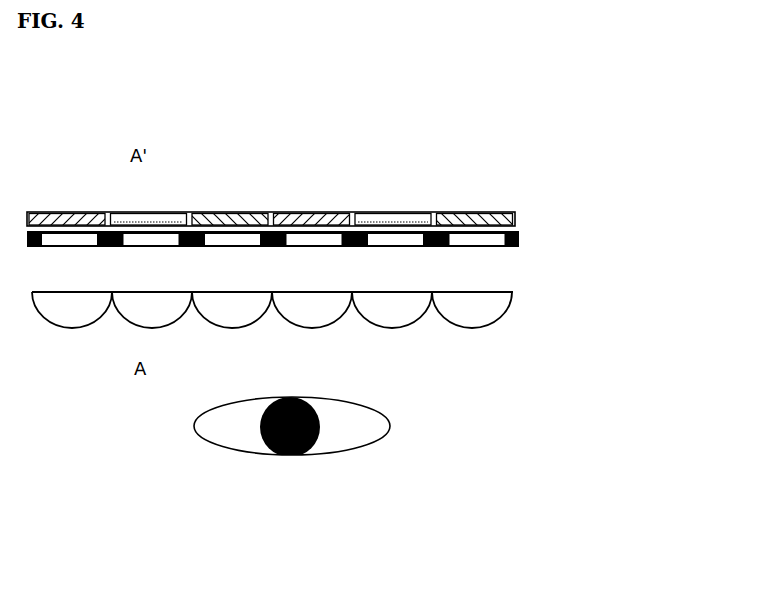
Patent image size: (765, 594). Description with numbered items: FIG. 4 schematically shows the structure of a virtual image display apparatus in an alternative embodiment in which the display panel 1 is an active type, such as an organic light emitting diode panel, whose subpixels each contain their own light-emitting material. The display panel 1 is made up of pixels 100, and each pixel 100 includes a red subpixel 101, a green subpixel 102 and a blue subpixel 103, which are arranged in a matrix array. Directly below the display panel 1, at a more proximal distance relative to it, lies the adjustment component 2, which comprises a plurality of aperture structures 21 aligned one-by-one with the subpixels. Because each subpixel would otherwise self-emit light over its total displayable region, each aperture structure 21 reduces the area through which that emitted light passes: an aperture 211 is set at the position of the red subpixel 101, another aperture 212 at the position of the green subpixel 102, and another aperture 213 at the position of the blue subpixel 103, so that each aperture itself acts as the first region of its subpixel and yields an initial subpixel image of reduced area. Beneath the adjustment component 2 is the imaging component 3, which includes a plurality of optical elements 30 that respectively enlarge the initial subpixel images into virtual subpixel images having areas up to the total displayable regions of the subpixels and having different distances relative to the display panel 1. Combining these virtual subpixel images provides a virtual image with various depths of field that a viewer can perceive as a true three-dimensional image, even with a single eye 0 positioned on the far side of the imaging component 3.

The eye 0 is at (380, 445).
The display panel 1 is at (340, 146).
The pixel 100 is at (464, 143).
The red subpixel 101 is at (317, 212).
The green subpixel 102 is at (387, 216).
The blue subpixel 103 is at (513, 193).
The adjustment component 2 is at (307, 261).
The aperture structure 21 is at (509, 262).
The aperture 211 is at (314, 249).
The aperture 212 is at (395, 249).
The aperture 213 is at (477, 249).
The imaging component 3 is at (339, 331).
The optical element 30 is at (483, 313).